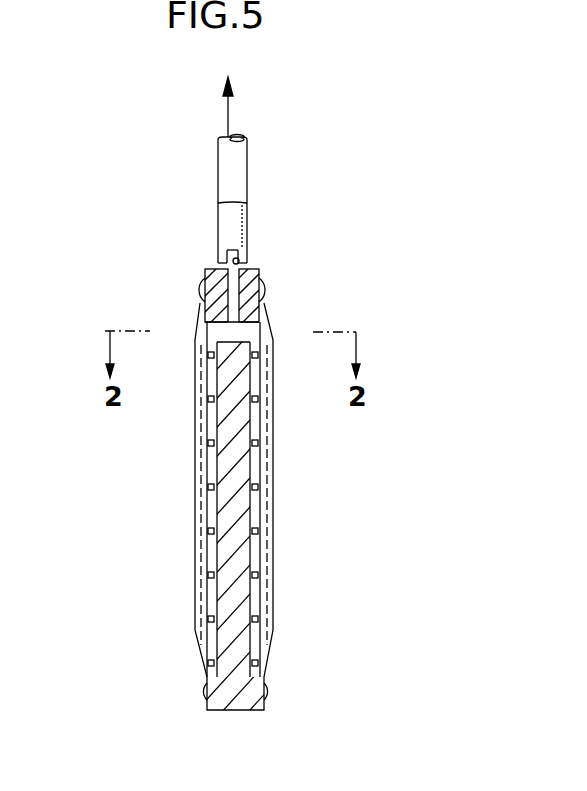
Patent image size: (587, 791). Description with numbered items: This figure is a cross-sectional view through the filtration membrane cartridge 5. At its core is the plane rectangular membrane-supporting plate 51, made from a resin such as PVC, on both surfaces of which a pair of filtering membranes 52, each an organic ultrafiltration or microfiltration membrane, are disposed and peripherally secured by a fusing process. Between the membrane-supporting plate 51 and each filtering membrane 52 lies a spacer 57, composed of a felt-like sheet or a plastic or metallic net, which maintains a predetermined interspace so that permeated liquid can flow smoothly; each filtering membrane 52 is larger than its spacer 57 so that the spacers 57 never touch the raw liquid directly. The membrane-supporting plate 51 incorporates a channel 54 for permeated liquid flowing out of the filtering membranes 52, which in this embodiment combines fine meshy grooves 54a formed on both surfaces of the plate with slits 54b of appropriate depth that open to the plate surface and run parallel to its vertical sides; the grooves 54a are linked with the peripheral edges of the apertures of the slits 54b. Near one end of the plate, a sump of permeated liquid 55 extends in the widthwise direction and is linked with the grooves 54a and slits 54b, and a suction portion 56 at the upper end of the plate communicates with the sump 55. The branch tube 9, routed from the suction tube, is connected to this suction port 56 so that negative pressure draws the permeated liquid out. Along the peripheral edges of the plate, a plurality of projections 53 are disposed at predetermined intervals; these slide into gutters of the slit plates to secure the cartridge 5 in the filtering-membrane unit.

The branch tube 9 is at (218, 237).
The filtration membrane cartridge 5 is at (191, 316).
The membrane-supporting plate 51 is at (268, 680).
The filtering membrane 52 is at (197, 473).
The projection 53 is at (203, 699).
The channel 54 is at (239, 499).
The fine meshy grooves 54a is at (207, 534).
The slits 54b is at (210, 605).
The sump of permeated liquid 55 is at (252, 328).
The suction portion 56 is at (239, 264).
The spacer 57 is at (195, 445).